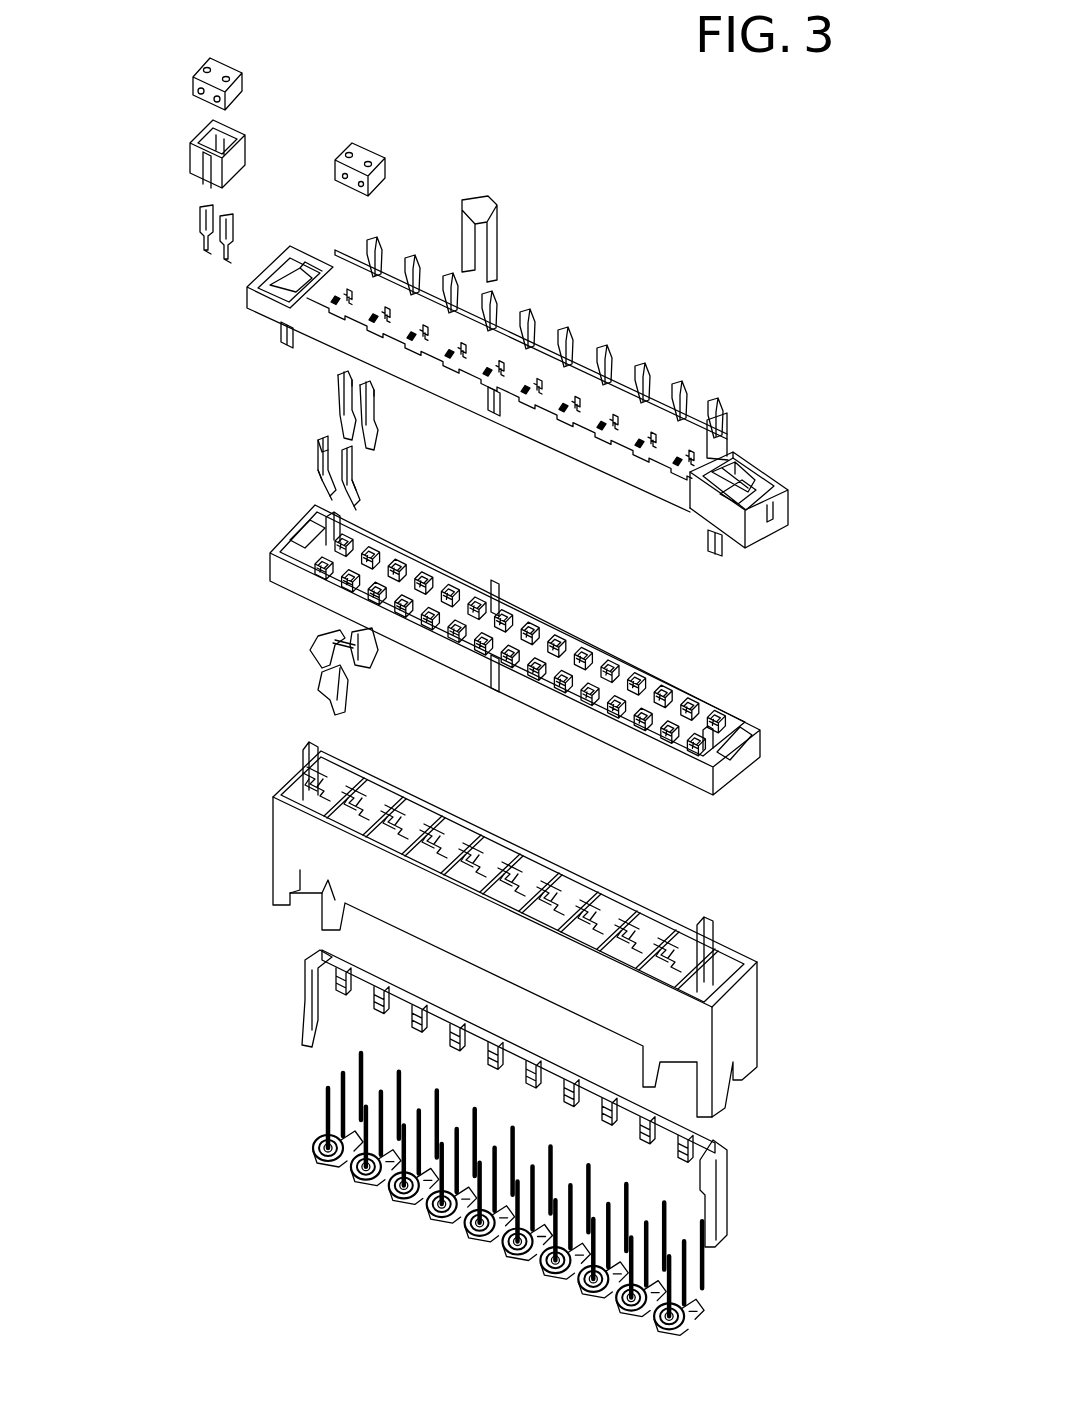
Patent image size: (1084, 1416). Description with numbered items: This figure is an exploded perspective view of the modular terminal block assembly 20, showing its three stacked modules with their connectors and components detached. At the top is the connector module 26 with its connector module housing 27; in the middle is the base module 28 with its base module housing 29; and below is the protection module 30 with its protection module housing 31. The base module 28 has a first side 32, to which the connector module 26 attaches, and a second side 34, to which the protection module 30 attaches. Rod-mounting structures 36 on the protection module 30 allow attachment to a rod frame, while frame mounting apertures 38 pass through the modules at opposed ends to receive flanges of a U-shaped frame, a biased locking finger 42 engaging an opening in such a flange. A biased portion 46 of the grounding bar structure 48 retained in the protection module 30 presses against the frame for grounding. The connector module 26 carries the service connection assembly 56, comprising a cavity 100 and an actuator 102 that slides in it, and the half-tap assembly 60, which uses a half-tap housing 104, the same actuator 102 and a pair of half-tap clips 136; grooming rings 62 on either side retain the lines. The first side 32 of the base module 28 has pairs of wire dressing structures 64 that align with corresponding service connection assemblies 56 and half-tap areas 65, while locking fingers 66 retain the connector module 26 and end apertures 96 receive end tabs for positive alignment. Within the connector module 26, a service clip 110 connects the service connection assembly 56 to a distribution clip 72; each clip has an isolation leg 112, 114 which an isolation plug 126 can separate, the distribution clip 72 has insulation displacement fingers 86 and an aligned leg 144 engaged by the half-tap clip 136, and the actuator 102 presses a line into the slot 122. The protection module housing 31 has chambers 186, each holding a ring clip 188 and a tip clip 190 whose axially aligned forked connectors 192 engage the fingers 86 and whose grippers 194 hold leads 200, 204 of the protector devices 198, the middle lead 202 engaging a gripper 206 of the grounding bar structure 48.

The modular terminal block assembly 20 is at (620, 217).
The connector module 26 is at (182, 303).
The connector module housing 27 is at (318, 326).
The base module 28 is at (781, 737).
The base module housing 29 is at (697, 778).
The protection module 30 is at (242, 852).
The protection module housing 31 is at (417, 910).
The first side 32 is at (538, 603).
The second side 34 is at (617, 768).
The rod-mounting structure 36 is at (294, 900).
The frame mounting aperture 38 is at (304, 796).
The biased locking finger 42 is at (738, 468).
The biased portion 46 is at (300, 1023).
The grounding bar structure 48 is at (265, 1024).
The service connection assembly 56 is at (313, 200).
The half-tap assembly 60 is at (168, 48).
The grooming ring 62 is at (762, 490).
The wire dressing structure 64 is at (420, 560).
The half-tap area 65 is at (645, 432).
The locking finger 66 is at (330, 512).
The distribution clip 72 is at (389, 488).
The insulation displacement finger 86 is at (318, 479).
The end aperture 96 is at (302, 548).
The cavity 100 is at (370, 240).
The actuator 102 is at (192, 92).
The half-tap housing 104 is at (190, 160).
The service clip 110 is at (327, 372).
The isolation leg 112 is at (345, 403).
The isolation leg 114 is at (326, 433).
The slot 122 is at (358, 391).
The isolation plug 126 is at (463, 250).
The half-tap clip 136 is at (229, 258).
The aligned leg 144 is at (322, 440).
The chamber 186 is at (343, 786).
The ring clip 188 is at (297, 647).
The tip clip 190 is at (306, 712).
The forked connector 192 is at (325, 642).
The gripper 194 is at (318, 687).
The protector device 198 is at (363, 1195).
The lead 200 is at (326, 1092).
The lead 202 is at (341, 1076).
The lead 204 is at (359, 1054).
The gripper 206 is at (383, 1022).